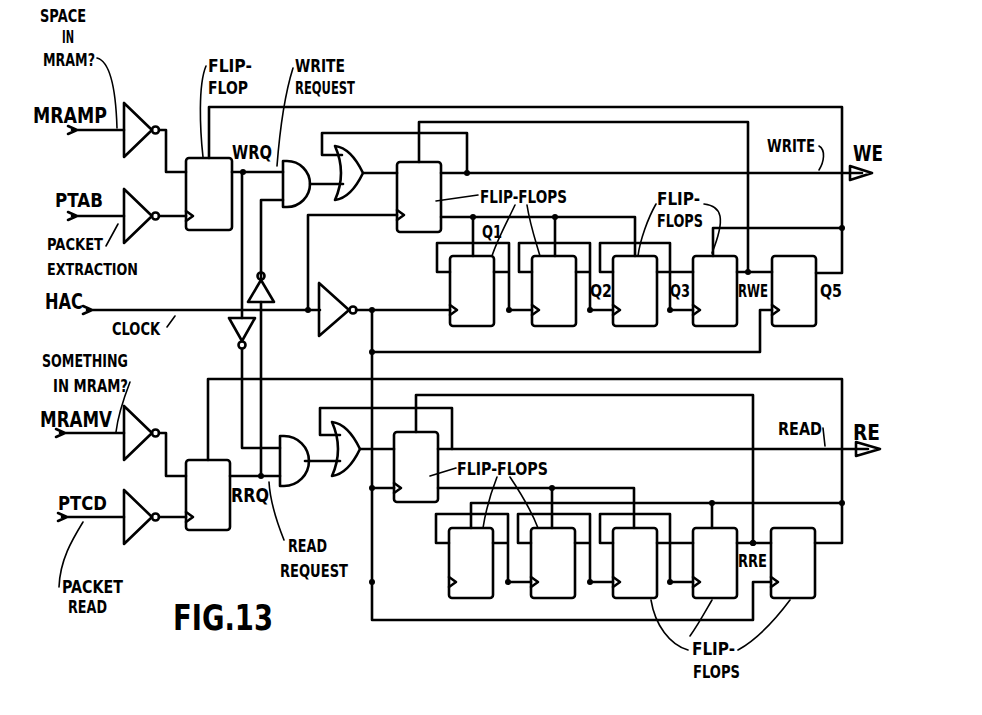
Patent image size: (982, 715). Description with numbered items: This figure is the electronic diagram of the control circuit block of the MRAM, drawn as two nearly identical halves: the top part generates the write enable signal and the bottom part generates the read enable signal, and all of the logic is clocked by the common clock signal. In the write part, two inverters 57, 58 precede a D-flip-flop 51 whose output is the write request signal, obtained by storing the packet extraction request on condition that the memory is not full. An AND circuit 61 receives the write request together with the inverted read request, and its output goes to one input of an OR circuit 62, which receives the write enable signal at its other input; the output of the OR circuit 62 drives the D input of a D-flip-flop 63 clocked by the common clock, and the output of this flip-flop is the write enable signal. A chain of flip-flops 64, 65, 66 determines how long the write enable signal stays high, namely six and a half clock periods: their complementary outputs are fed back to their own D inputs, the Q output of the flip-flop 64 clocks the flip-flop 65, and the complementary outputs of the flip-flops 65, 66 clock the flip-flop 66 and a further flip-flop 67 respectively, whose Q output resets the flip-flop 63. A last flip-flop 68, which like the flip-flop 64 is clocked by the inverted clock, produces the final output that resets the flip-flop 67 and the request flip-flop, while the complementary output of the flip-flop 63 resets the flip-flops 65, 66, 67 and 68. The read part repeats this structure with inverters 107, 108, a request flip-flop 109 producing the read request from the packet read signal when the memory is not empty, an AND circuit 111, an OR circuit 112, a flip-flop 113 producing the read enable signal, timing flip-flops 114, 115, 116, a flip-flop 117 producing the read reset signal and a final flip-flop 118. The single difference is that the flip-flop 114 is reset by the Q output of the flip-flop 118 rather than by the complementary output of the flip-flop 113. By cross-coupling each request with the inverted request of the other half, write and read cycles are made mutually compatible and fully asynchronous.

The inverter 57 is at (134, 117).
The inverter 58 is at (134, 224).
The D-flip-flop 51 is at (220, 226).
The AND circuit 61 is at (291, 208).
The OR circuit 62 is at (364, 143).
The D-flip-flop 63 is at (410, 222).
The D-flip-flop 64 is at (466, 324).
The D-flip-flop 65 is at (548, 324).
The D-flip-flop 66 is at (630, 324).
The D-flip-flop 67 is at (710, 324).
The D-flip-flop 68 is at (800, 326).
The inverter 107 is at (143, 406).
The inverter 108 is at (133, 523).
The D-flip-flop 109 is at (197, 532).
The AND circuit 111 is at (296, 487).
The OR circuit 112 is at (354, 477).
The D-flip-flop 113 is at (426, 503).
The D-flip-flop 114 is at (465, 598).
The D-flip-flop 115 is at (549, 598).
The D-flip-flop 116 is at (631, 598).
The D-flip-flop 117 is at (711, 598).
The D-flip-flop 118 is at (815, 578).